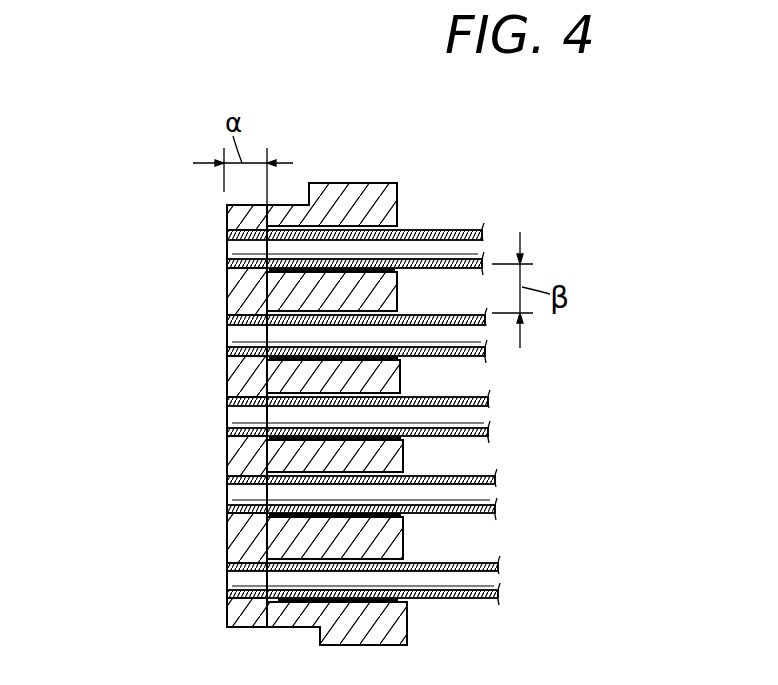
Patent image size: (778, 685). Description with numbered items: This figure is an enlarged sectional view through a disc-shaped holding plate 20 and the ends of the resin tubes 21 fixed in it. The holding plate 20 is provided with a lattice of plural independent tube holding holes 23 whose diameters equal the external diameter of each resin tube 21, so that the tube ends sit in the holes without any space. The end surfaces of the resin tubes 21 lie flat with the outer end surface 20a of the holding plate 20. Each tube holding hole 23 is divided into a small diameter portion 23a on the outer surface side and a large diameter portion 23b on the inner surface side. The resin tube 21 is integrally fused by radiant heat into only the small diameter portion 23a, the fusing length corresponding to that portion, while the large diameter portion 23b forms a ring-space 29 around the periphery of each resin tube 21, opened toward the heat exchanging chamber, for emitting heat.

The holding plate 20 is at (337, 183).
The outer end surface 20a is at (227, 292).
The resin tube 21 is at (445, 314).
The tube holding hole 23 is at (276, 520).
The small diameter portion 23a is at (227, 495).
The large diameter portion 23b is at (227, 545).
The ring-space 29 is at (405, 470).